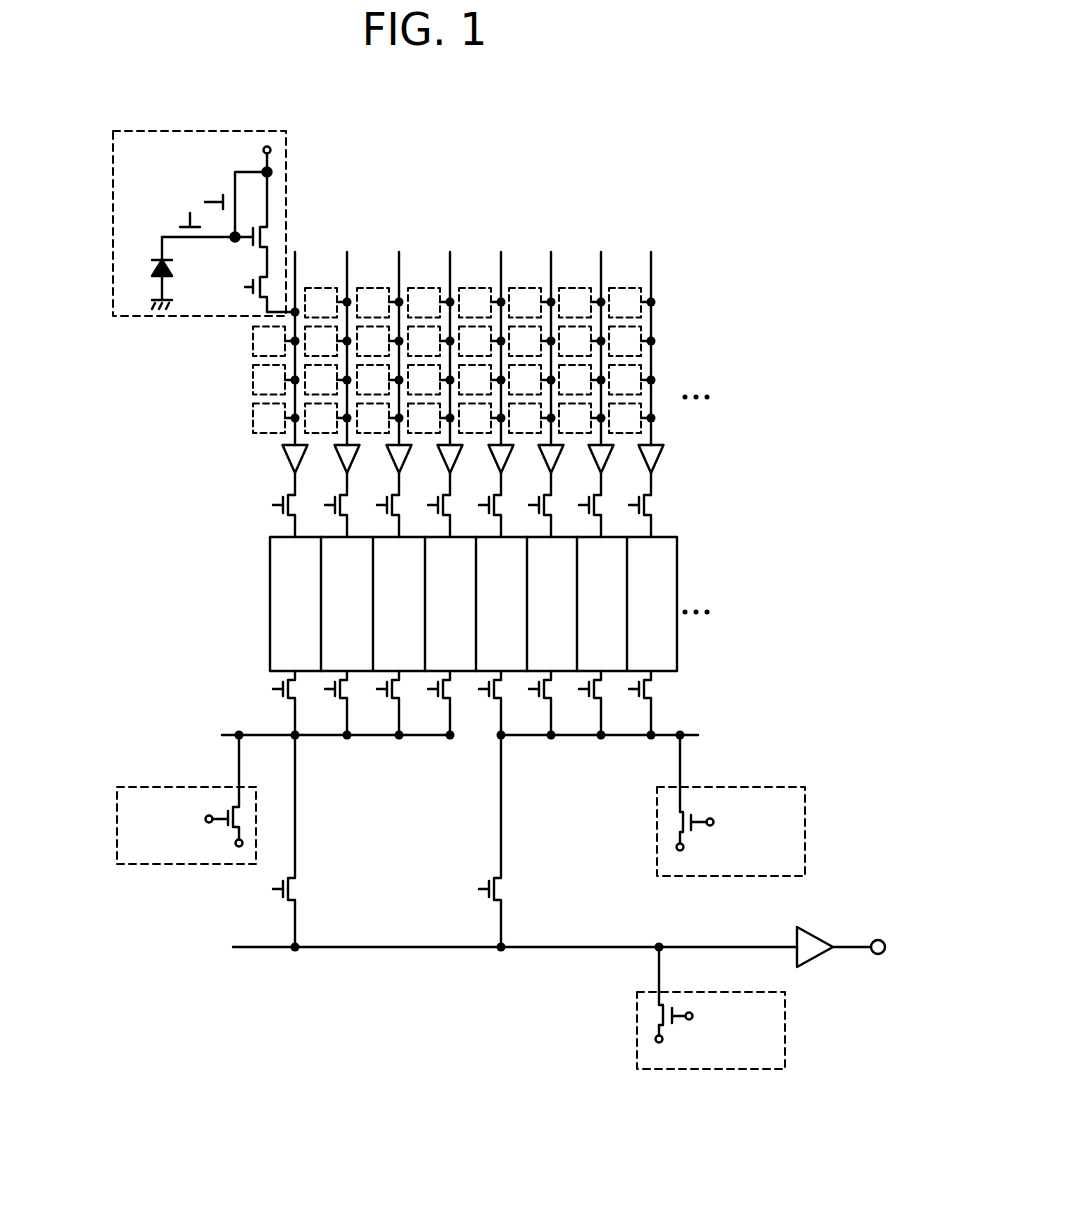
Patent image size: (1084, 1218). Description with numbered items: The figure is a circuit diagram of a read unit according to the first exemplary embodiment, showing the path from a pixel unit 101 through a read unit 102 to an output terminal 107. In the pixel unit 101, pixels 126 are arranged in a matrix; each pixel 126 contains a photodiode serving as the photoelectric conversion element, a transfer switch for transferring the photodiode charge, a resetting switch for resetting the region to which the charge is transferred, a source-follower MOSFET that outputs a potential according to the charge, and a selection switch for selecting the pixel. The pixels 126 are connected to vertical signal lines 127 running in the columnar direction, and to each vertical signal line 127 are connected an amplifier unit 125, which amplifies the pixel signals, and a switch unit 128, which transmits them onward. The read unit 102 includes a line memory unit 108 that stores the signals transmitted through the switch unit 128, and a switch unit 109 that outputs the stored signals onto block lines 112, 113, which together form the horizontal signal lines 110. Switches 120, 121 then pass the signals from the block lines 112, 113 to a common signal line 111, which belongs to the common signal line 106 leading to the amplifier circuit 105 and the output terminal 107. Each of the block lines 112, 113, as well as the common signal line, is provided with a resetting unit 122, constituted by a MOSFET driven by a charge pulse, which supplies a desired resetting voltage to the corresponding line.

The pixel unit 101 is at (98, 143).
The read unit 102 is at (100, 513).
The amplifier circuit 105 is at (815, 932).
The common signal line 106 is at (205, 927).
The output terminal 107 is at (885, 952).
The line memory unit 108 is at (260, 545).
The switch unit 109 is at (260, 673).
The horizontal signal lines 110 is at (205, 720).
The common signal line 111 is at (535, 947).
The block line 112 is at (310, 735).
The block line 113 is at (532, 735).
The switch 120 is at (298, 891).
The switch 121 is at (504, 891).
The resetting unit 122 is at (140, 867).
The amplifier unit 125 is at (260, 443).
The pixel 126 is at (202, 318).
The vertical signal line 127 is at (295, 262).
The switch unit 128 is at (260, 492).